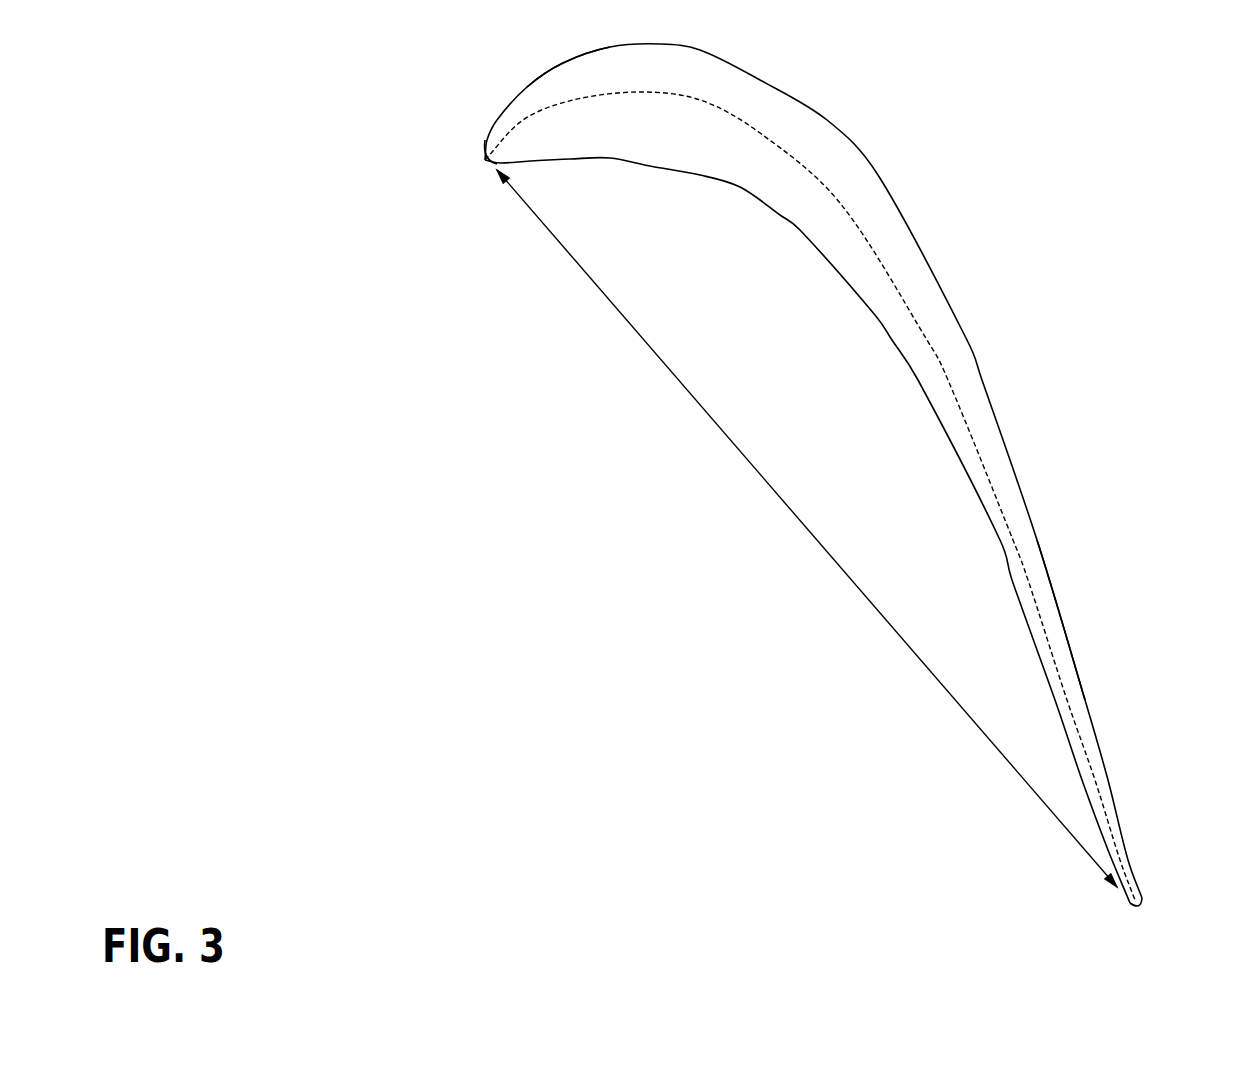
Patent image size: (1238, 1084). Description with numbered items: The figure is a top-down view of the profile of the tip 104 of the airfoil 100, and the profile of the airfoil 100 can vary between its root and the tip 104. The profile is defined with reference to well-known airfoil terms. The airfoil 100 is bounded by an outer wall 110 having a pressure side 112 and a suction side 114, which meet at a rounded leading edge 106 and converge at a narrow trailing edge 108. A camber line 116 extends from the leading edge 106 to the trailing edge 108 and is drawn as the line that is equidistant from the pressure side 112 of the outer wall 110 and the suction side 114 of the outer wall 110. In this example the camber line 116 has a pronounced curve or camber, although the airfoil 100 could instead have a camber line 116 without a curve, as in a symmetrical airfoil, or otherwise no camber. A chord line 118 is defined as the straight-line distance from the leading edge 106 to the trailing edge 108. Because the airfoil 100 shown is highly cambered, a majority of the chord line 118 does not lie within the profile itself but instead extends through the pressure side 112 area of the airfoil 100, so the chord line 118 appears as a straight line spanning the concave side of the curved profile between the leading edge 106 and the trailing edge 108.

The airfoil 100 is at (298, 170).
The tip 104 is at (568, 87).
The leading edge 106 is at (483, 162).
The trailing edge 108 is at (1136, 908).
The outer wall 110 is at (1058, 602).
The pressure side 112 is at (875, 315).
The suction side 114 is at (878, 175).
The camber line 116 is at (970, 423).
The chord line 118 is at (630, 325).